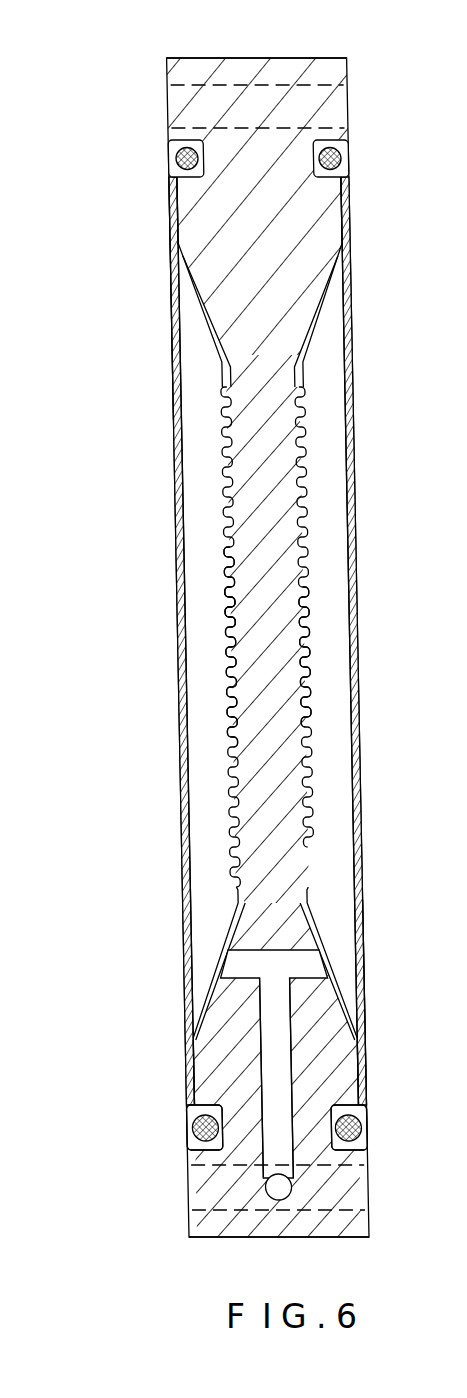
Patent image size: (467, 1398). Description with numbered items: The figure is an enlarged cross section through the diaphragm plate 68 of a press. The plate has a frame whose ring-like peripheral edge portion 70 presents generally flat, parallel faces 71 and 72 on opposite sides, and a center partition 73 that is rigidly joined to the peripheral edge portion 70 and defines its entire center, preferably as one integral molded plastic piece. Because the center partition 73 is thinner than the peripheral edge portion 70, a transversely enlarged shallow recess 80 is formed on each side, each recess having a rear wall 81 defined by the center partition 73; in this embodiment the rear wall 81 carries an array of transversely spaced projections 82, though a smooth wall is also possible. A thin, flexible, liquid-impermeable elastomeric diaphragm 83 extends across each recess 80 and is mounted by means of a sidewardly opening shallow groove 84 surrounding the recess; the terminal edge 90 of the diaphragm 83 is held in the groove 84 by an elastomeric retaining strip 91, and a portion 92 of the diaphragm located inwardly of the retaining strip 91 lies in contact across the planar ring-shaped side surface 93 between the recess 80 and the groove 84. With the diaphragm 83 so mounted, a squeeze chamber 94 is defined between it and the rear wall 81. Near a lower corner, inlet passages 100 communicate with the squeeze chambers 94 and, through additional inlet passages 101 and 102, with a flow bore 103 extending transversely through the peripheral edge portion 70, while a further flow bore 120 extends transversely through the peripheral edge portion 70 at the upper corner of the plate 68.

The diaphragm plate 68 is at (238, 42).
The peripheral edge portion 70 is at (186, 204).
The flat face 71 is at (165, 450).
The flat face 72 is at (358, 382).
The center partition 73 is at (222, 611).
The shallow recess 80 is at (208, 667).
The rear wall 81 is at (227, 703).
The projections 82 is at (236, 751).
The diaphragm 83 is at (168, 540).
The shallow groove 84 is at (190, 1100).
The terminal edge 90 is at (190, 1137).
The retaining strip 91 is at (170, 160).
The diaphragm portion 92 is at (172, 189).
The ring-shaped side surface 93 is at (170, 234).
The squeeze chamber 94 is at (208, 808).
The inlet passages 100 is at (300, 958).
The inlet passage 101 is at (285, 1010).
The inlet passage 102 is at (292, 1187).
The flow bore 103 is at (188, 1188).
The flow bore 120 is at (353, 108).